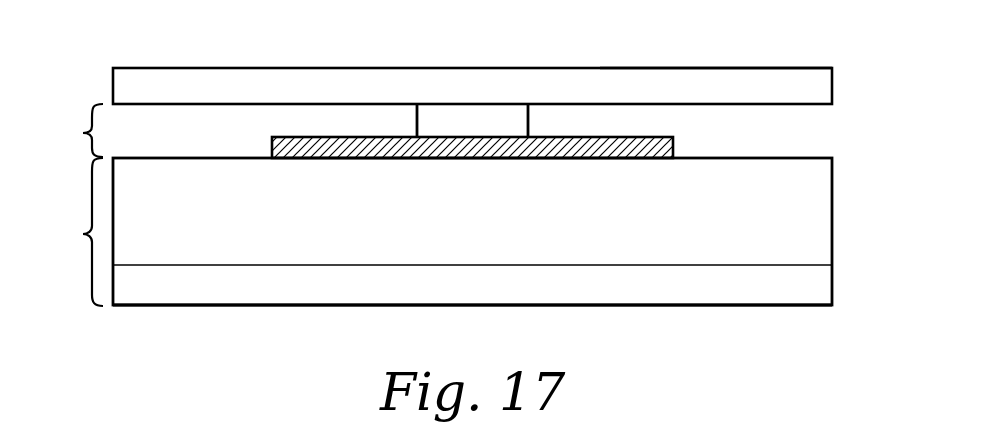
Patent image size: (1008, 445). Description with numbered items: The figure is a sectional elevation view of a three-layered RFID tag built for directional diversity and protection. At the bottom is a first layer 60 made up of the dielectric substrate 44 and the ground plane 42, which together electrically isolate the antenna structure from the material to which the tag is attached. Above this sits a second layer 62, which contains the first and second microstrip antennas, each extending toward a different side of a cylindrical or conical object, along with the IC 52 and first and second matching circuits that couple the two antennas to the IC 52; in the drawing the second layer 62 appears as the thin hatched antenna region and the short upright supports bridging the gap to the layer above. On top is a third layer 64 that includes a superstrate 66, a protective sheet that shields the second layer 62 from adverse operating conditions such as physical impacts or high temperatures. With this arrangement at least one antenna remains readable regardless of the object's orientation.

The ground plane 42 is at (758, 307).
The dielectric substrate 44 is at (832, 220).
The IC 52 is at (528, 123).
The first layer 60 is at (83, 234).
The second layer 62 is at (83, 133).
The third layer 64 is at (113, 88).
The superstrate 66 is at (732, 70).